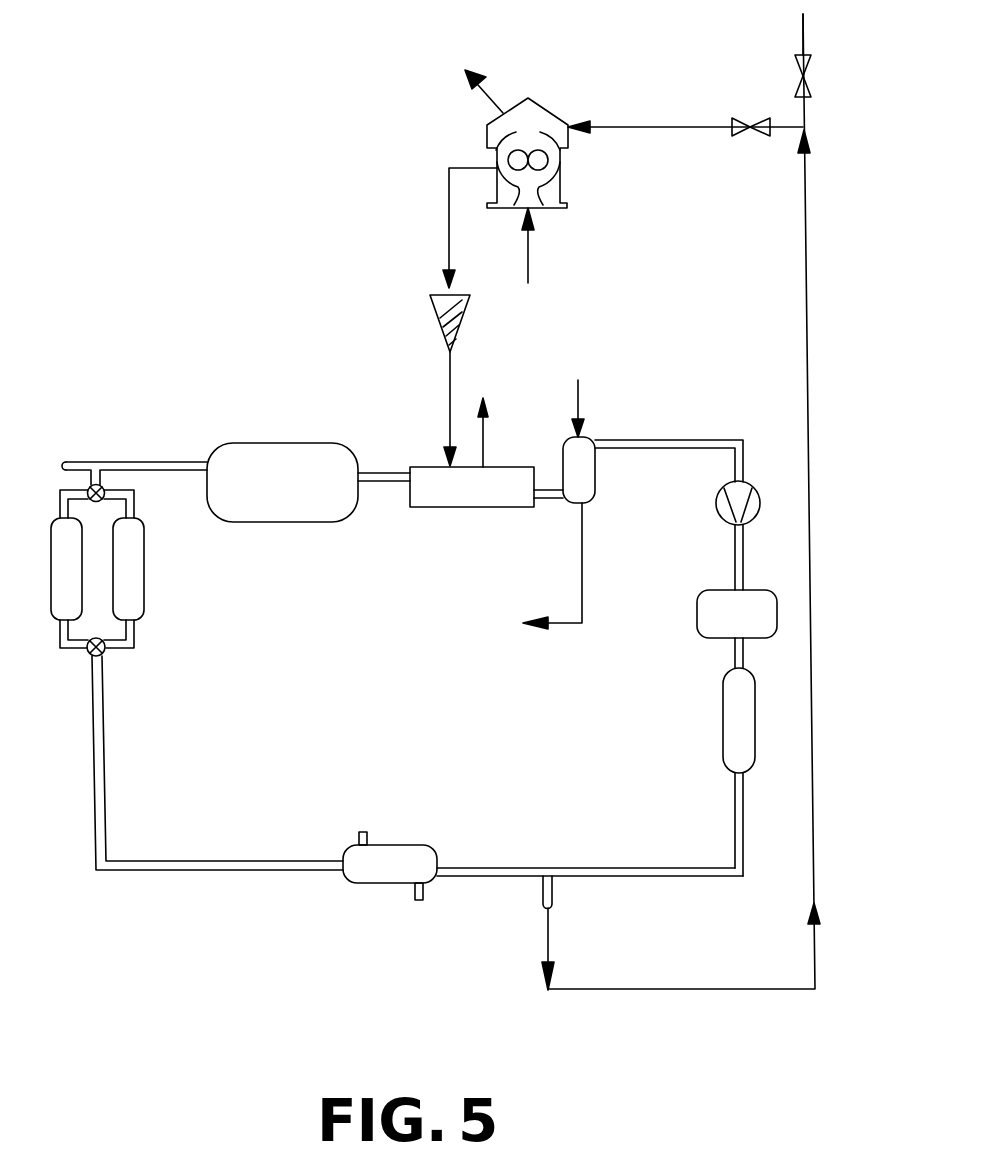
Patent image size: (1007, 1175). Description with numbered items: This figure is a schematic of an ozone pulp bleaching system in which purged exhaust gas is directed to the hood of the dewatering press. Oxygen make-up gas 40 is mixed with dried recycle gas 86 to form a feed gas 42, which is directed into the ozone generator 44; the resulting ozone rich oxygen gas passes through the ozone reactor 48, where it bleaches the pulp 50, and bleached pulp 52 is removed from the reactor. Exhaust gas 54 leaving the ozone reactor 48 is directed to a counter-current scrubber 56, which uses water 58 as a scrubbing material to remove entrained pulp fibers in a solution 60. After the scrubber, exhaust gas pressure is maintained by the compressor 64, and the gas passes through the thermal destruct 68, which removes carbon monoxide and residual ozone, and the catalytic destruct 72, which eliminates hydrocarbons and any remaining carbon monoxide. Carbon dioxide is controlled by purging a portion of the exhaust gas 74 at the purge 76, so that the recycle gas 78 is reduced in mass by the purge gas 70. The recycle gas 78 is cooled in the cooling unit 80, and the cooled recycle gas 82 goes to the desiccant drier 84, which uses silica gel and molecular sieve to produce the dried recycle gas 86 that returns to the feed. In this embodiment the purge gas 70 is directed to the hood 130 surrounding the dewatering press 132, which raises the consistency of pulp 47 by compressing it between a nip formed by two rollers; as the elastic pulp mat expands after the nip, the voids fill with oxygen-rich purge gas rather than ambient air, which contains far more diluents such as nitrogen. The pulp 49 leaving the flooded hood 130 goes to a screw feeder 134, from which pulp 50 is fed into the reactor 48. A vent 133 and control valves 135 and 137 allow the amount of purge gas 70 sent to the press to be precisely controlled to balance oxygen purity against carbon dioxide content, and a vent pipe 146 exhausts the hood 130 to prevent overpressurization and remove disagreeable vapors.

The oxygen make-up gas 40 is at (72, 462).
The feed gas 42 is at (132, 462).
The ozone generator 44 is at (288, 456).
The pulp 47 is at (530, 252).
The ozone reactor 48 is at (484, 497).
The pulp stream 49 is at (448, 213).
The pulp 50 is at (449, 400).
The bleached pulp 52 is at (483, 452).
The exhaust gas 54 is at (556, 502).
The counter-current scrubber 56 is at (590, 476).
The water 58 is at (580, 422).
The solution 60 is at (554, 626).
The compressor 64 is at (720, 513).
The thermal destruct 68 is at (708, 610).
The purge gas 70 is at (549, 953).
The catalytic destruct 72 is at (735, 731).
The exhaust gas 74 is at (736, 823).
The purge 76 is at (552, 898).
The recycle gas 78 is at (510, 868).
The cooling unit 80 is at (387, 862).
The cooled recycle gas 82 is at (267, 862).
The desiccant drier 84 is at (140, 597).
The dried recycle gas 86 is at (100, 479).
The hood 130 is at (560, 98).
The dewatering press 132 is at (561, 181).
The vent 133 is at (802, 30).
The screw feeder 134 is at (441, 318).
The control valve 135 is at (800, 70).
The control valve 137 is at (740, 118).
The vent pipe 146 is at (490, 98).